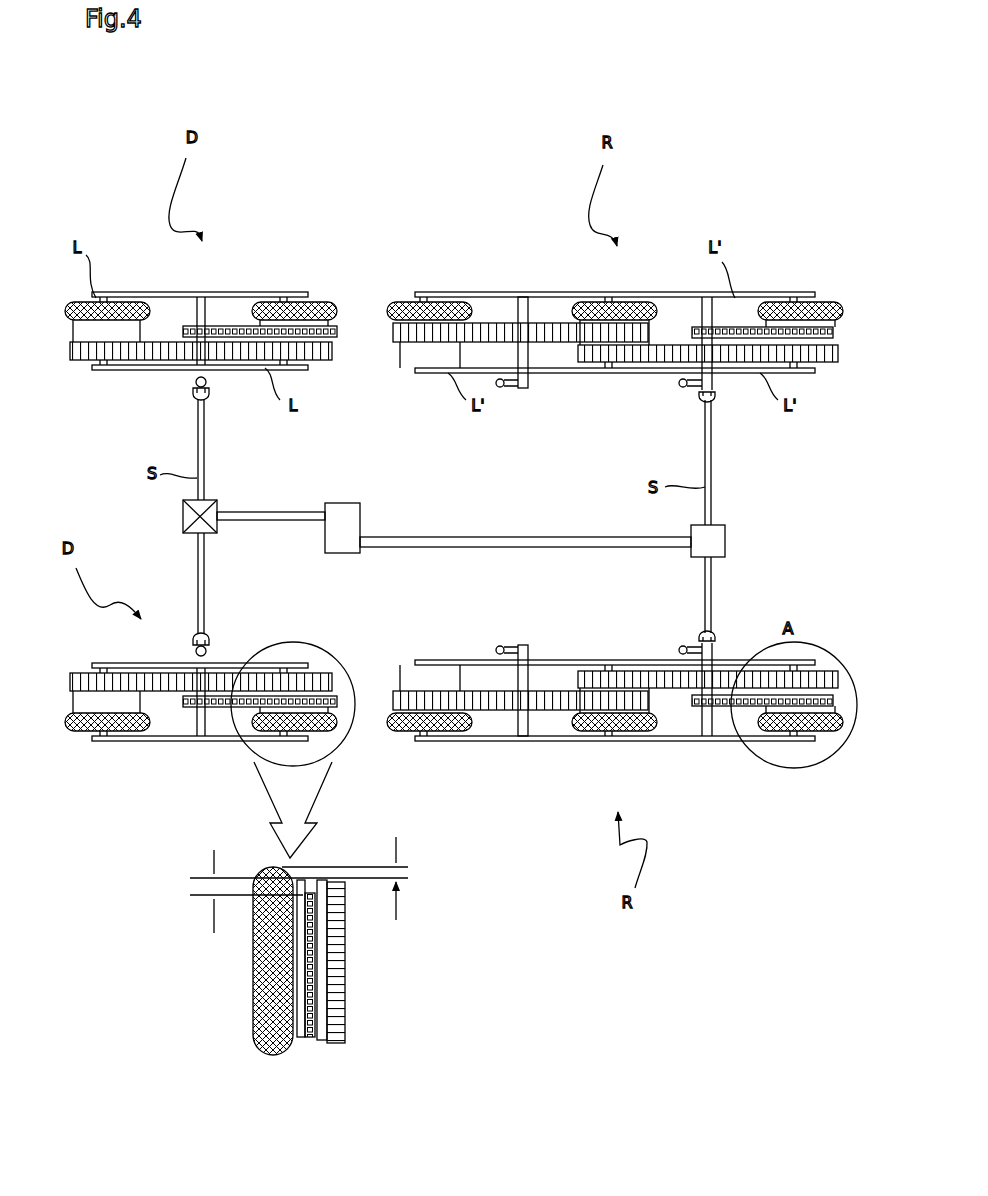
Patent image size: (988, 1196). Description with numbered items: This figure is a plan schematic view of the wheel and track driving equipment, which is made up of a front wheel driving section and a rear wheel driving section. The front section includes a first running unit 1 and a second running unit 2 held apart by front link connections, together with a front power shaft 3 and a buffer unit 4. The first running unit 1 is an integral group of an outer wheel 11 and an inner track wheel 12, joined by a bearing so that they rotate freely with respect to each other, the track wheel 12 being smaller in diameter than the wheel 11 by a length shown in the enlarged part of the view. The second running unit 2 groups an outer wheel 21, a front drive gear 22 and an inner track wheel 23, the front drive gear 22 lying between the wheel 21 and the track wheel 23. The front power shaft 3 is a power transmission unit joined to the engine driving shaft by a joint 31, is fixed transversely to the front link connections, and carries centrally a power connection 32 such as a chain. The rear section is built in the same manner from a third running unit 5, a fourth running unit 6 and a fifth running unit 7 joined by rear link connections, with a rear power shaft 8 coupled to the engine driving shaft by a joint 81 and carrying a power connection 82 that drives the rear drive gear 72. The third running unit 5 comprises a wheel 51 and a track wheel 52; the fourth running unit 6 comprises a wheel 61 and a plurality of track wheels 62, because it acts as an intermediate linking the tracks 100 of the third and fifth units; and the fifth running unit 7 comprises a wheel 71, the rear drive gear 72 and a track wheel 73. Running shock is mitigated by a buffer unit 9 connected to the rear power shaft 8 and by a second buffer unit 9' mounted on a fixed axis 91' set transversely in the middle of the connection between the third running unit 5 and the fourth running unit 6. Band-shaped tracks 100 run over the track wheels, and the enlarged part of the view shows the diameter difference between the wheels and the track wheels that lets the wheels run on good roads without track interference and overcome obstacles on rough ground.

The first running unit 1 is at (125, 278).
The second running unit 2 is at (304, 278).
The front power shaft 3 is at (192, 298).
The buffer unit 4 is at (196, 387).
The third running unit 5 is at (438, 278).
The fourth running unit 6 is at (586, 281).
The fifth running unit 7 is at (806, 278).
The rear power shaft 8 is at (703, 298).
The buffer unit 9 is at (671, 402).
The buffer unit 9' is at (516, 404).
The wheel 11 is at (70, 303).
The track wheel 12 is at (72, 324).
The wheel 21 is at (336, 330).
The front drive gear 22 is at (314, 298).
The track wheel 23 is at (256, 1000).
The joint 31 is at (210, 400).
The power connection 32 is at (228, 326).
The wheel 51 is at (390, 300).
The track wheel 52 is at (418, 353).
The wheel 61 is at (633, 302).
The track wheel 62 is at (338, 995).
The wheel 71 is at (845, 302).
The rear drive gear 72 is at (770, 297).
The track wheel 73 is at (282, 1047).
The joint 81 is at (720, 400).
The power connection 82 is at (840, 337).
The fixed axis 91' is at (502, 318).
The tracks 100 is at (322, 360).